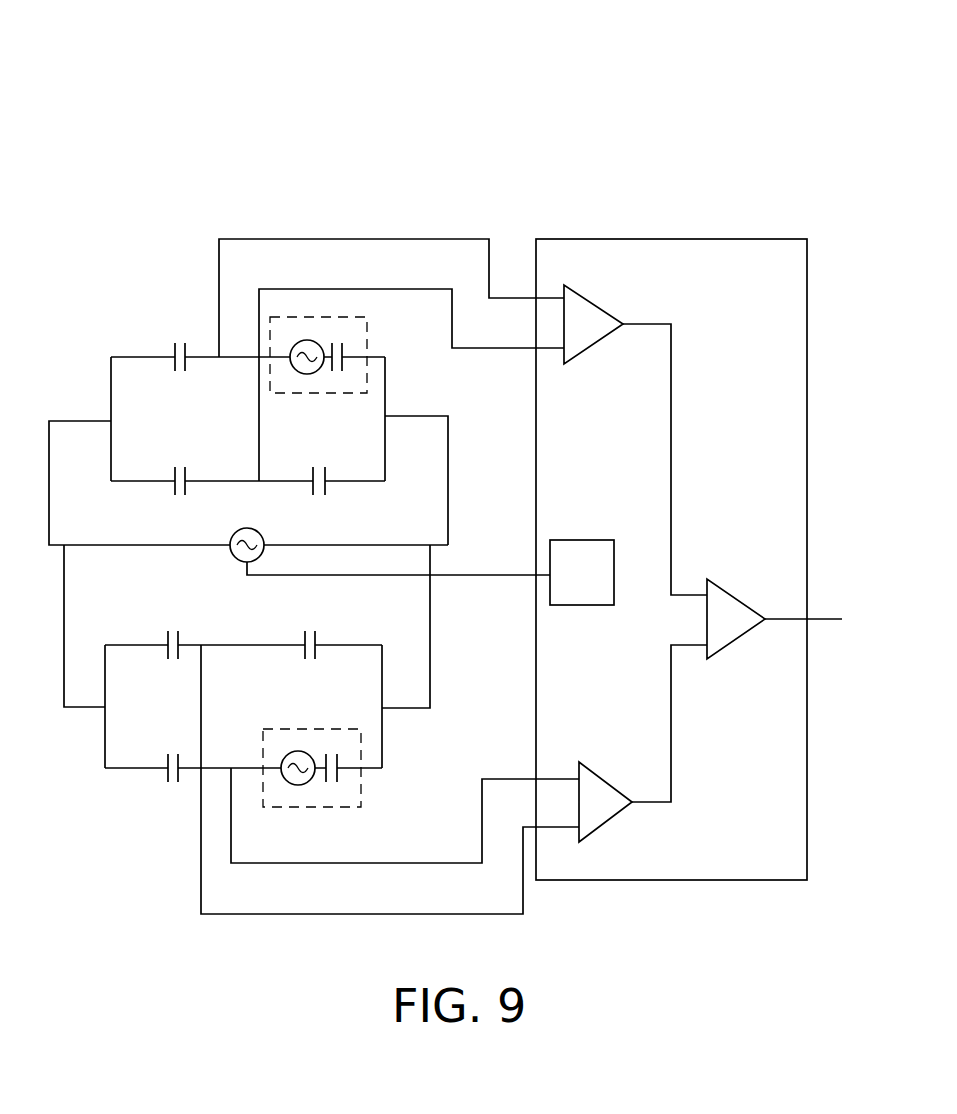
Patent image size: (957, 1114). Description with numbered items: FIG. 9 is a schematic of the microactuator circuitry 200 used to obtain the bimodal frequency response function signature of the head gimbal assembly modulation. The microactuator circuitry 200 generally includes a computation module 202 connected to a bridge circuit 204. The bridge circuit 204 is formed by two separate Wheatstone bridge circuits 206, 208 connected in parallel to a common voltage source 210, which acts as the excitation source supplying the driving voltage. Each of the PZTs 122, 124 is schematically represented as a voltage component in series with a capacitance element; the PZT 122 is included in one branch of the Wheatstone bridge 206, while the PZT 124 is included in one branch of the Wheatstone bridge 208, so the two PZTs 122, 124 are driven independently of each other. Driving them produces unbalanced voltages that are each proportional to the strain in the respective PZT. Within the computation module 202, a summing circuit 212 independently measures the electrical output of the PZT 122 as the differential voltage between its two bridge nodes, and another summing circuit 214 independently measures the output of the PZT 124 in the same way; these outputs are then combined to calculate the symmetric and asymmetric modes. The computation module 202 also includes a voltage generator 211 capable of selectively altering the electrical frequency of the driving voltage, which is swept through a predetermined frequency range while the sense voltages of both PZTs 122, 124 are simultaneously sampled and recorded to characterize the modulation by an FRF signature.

The microactuator circuitry 200 is at (713, 127).
The computation module 202 is at (807, 373).
The bridge circuit 204 is at (158, 228).
The Wheatstone bridge circuit 206 is at (410, 405).
The Wheatstone bridge circuit 208 is at (422, 726).
The voltage source 210 is at (237, 534).
The voltage generator 211 is at (575, 540).
The summing circuit 212 is at (592, 302).
The summing circuit 214 is at (606, 780).
The PZT 122 is at (358, 395).
The PZT 124 is at (320, 808).